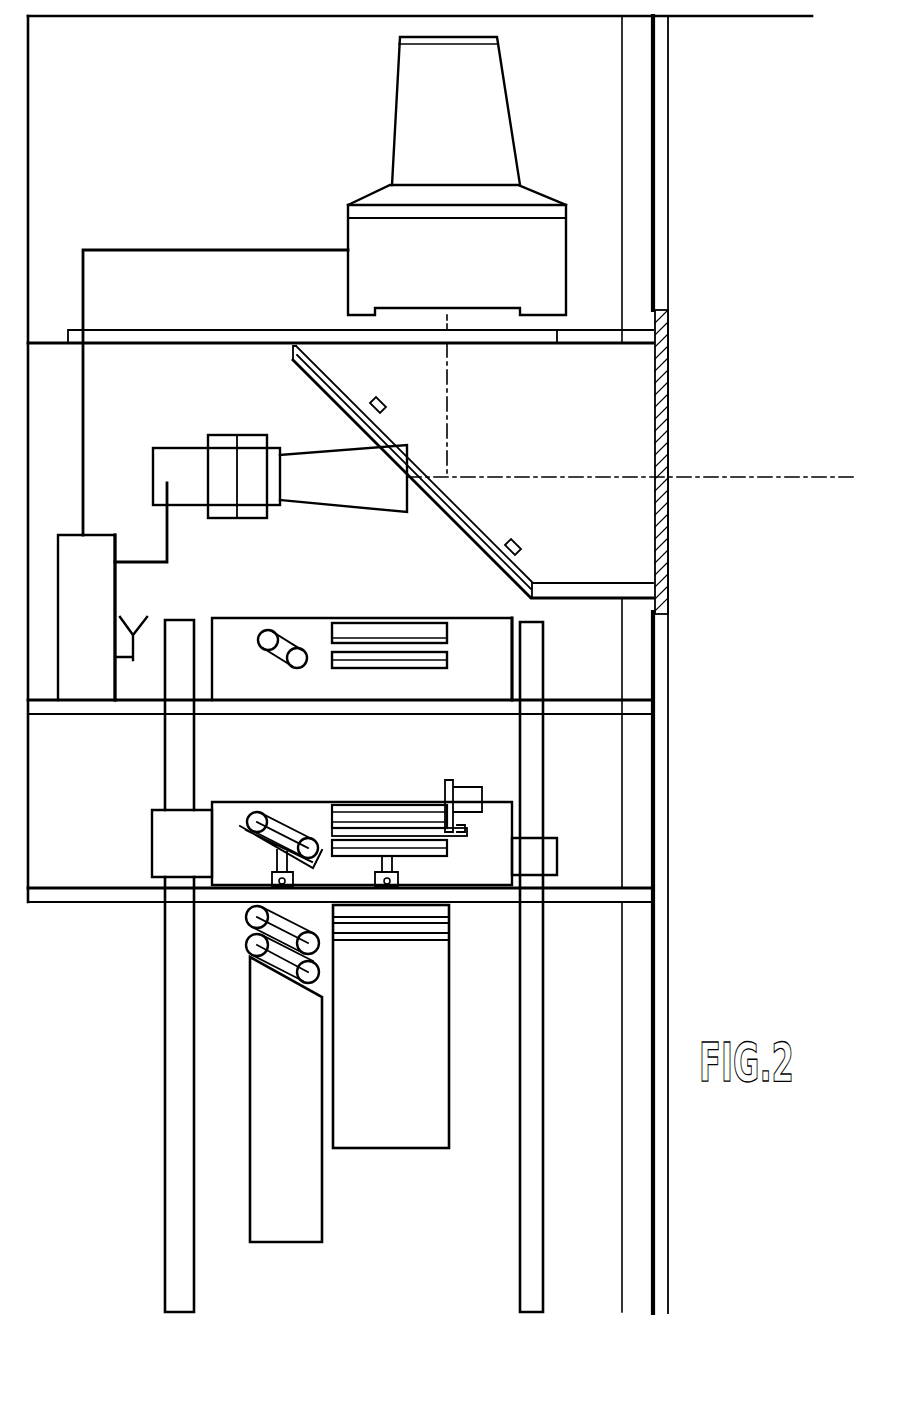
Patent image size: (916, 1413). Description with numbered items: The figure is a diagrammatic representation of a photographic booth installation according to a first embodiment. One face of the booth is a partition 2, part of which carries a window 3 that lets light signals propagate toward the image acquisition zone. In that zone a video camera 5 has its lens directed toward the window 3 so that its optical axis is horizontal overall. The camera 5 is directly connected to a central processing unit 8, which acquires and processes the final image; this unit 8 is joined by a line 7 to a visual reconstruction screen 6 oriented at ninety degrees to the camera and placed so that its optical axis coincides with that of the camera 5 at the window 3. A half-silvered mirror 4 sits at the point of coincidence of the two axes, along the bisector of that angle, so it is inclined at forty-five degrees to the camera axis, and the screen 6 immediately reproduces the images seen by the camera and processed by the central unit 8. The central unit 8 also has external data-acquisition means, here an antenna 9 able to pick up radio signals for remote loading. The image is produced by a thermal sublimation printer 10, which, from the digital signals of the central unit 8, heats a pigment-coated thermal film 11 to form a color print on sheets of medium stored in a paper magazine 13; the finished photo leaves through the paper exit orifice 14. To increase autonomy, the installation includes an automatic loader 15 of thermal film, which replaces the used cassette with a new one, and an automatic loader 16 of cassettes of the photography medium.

The partition 2 is at (668, 788).
The window 3 is at (668, 408).
The half-silvered mirror 4 is at (508, 540).
The video camera 5 is at (183, 462).
The visual reconstruction screen 6 is at (375, 242).
The line 7 is at (155, 250).
The central processing unit 8 is at (103, 588).
The antenna 9 is at (135, 650).
The printer 10 is at (490, 647).
The thermal film 11 is at (280, 650).
The paper magazine 13 is at (447, 660).
The paper exit orifice 14 is at (398, 632).
The automatic loader of thermal film 15 is at (302, 1206).
The automatic loader of cassettes 16 is at (428, 1113).